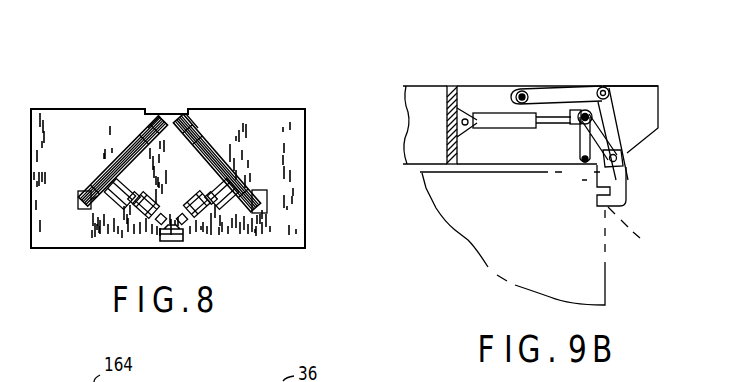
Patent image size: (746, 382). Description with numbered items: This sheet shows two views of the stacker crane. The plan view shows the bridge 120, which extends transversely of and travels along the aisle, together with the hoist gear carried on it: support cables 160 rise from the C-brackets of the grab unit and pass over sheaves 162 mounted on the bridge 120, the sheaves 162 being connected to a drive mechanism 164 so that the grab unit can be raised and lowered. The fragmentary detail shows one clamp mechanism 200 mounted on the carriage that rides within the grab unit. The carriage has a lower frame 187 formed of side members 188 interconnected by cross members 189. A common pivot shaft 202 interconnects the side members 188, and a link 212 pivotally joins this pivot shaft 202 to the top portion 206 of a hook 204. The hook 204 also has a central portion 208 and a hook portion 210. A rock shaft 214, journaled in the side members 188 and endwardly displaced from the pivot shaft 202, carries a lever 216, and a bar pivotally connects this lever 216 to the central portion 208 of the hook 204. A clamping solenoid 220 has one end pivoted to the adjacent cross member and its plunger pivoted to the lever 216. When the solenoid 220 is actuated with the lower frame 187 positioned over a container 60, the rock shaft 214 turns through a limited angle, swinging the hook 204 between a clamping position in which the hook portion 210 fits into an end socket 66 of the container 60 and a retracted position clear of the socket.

In FIG. 8, the bridge 120 is at (305, 203).
In FIG. 8, the support cables 160 is at (112, 170).
In FIG. 8, the sheaves 162 is at (155, 122).
In FIG. 8, the drive mechanism 164 is at (85, 188).
In FIG. 9B, the lower frame 187 is at (416, 86).
In FIG. 9B, the side members 188 is at (485, 97).
In FIG. 9B, the cross members 189 is at (447, 97).
In FIG. 9B, the clamp mechanism 200 is at (578, 130).
In FIG. 9B, the pivot shaft 202 is at (522, 91).
In FIG. 9B, the hook 204 is at (660, 92).
In FIG. 9B, the top portion 206 is at (612, 88).
In FIG. 9B, the central portion 208 is at (625, 152).
In FIG. 9B, the hook portion 210 is at (618, 192).
In FIG. 9B, the link 212 is at (558, 97).
In FIG. 9B, the rock shaft 214 is at (584, 165).
In FIG. 9B, the lever 216 is at (580, 140).
In FIG. 9B, the clamping solenoid 220 is at (495, 128).
In FIG. 9B, the container 60 is at (592, 262).
In FIG. 9B, the end sockets 66 is at (640, 229).